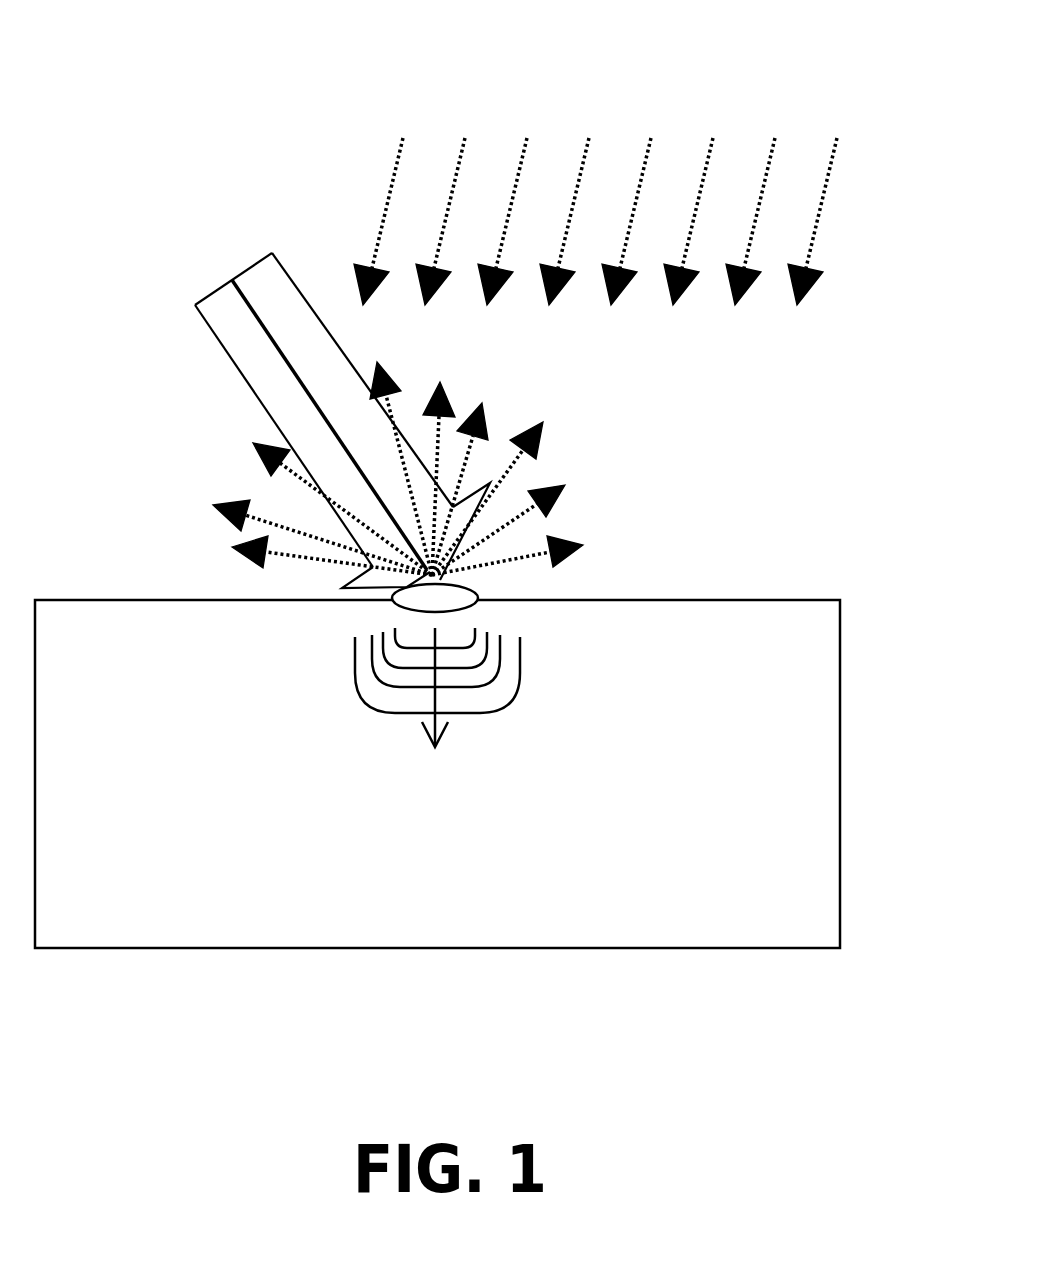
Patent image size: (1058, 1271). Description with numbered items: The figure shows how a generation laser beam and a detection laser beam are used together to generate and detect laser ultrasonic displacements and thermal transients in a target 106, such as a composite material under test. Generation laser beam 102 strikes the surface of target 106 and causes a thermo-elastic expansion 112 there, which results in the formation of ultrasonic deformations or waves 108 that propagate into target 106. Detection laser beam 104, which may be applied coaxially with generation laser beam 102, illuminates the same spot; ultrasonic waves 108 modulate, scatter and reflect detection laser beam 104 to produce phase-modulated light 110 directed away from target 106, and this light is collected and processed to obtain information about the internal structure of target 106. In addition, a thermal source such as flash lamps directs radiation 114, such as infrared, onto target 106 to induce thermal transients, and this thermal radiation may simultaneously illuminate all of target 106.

The generation laser beam 102 is at (232, 280).
The detection laser beam 104 is at (272, 253).
The target 106 is at (437, 774).
The ultrasonic waves 108 is at (458, 712).
The phase-modulated light 110 is at (563, 502).
The thermo-elastic expansion 112 is at (478, 606).
The radiation 114 is at (835, 147).